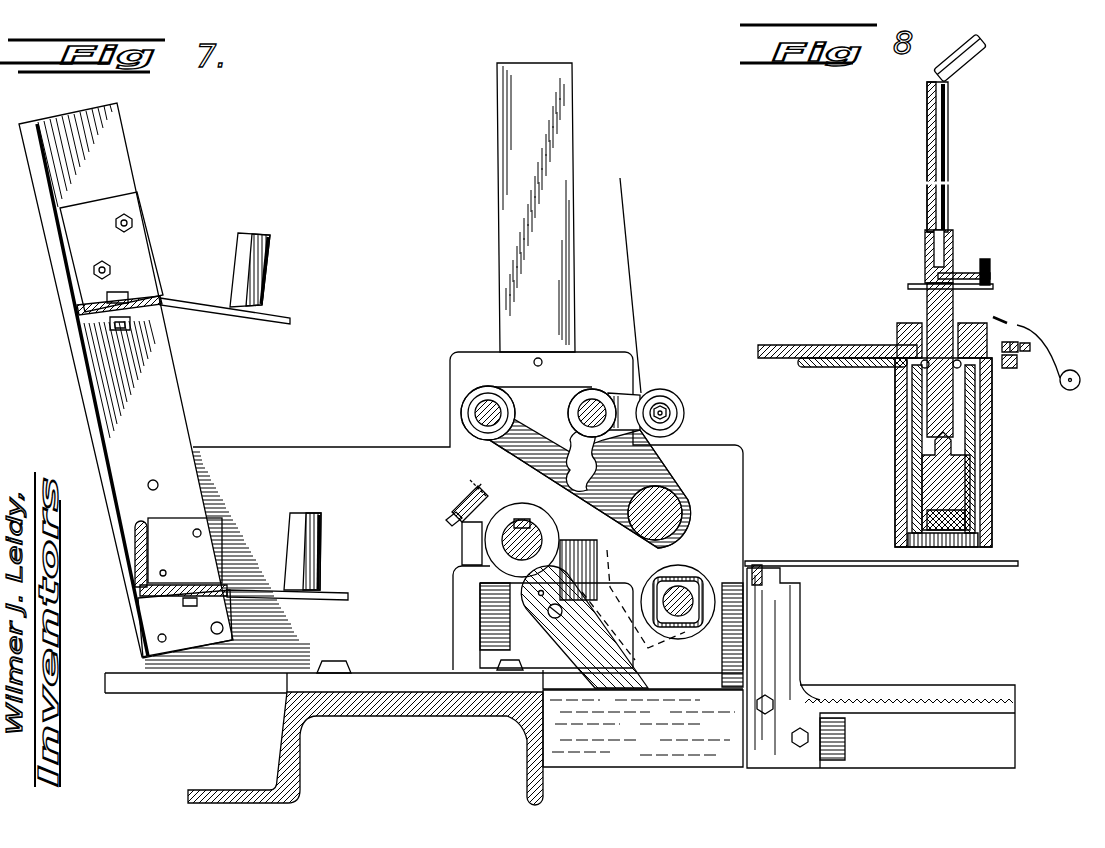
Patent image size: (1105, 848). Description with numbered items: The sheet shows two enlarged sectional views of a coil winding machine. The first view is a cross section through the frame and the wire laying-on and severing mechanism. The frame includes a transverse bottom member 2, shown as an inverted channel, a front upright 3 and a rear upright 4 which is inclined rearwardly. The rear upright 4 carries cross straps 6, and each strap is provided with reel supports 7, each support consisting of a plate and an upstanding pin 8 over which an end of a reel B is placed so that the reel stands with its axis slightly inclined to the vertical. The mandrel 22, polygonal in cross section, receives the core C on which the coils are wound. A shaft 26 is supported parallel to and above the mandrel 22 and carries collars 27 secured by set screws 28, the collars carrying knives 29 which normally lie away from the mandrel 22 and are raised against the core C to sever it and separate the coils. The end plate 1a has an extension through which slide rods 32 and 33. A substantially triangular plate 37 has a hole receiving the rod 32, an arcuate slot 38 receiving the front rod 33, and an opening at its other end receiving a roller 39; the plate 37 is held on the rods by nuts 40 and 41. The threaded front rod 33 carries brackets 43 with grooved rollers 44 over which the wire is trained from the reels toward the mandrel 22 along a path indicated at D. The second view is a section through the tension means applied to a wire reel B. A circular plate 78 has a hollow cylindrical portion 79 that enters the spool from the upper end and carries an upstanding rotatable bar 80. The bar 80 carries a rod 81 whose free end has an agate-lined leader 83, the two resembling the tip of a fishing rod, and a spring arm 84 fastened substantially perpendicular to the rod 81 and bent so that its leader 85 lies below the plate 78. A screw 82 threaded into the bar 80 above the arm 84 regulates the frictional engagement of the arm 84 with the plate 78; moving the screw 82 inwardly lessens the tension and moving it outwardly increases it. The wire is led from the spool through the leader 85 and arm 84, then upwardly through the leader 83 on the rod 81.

In FIG. 7, the rear upright 4 is at (120, 167).
In FIG. 7, the cross strap 6 is at (147, 308).
In FIG. 7, the reel support 7 is at (290, 320).
In FIG. 7, the upstanding pin 8 is at (268, 272).
In FIG. 7, the front upright 3 is at (563, 131).
In FIG. 7, the feed line D is at (627, 257).
In FIG. 7, the end plate 1a is at (727, 458).
In FIG. 7, the transverse bottom member 2 is at (413, 710).
In FIG. 7, the mandrel 22 is at (738, 570).
In FIG. 7, the plate 37 is at (577, 467).
In FIG. 7, the nut 40 is at (488, 410).
In FIG. 7, the slide rod 32 is at (488, 410).
In FIG. 7, the nut 41 is at (583, 384).
In FIG. 7, the front rod 33 is at (592, 405).
In FIG. 7, the bracket 43 is at (632, 405).
In FIG. 7, the roller 44 is at (723, 405).
In FIG. 7, the roller 39 is at (680, 500).
In FIG. 7, the arcuate slot 38 is at (552, 482).
In FIG. 7, the set screw 28 is at (470, 482).
In FIG. 7, the collar 27 is at (510, 545).
In FIG. 7, the shaft 26 is at (508, 545).
In FIG. 7, the core C is at (700, 578).
In FIG. 7, the knife 29 is at (617, 690).
In FIG. 8, the leader 83 is at (975, 57).
In FIG. 8, the rod 81 is at (948, 167).
In FIG. 8, the screw 82 is at (963, 268).
In FIG. 8, the spring arm 84 is at (920, 290).
In FIG. 8, the leader 85 is at (1070, 369).
In FIG. 8, the circular plate 78 is at (828, 350).
In FIG. 8, the rotatable bar 80 is at (942, 396).
In FIG. 8, the cylindrical portion 79 is at (970, 422).
In FIG. 8, the reel B is at (988, 527).